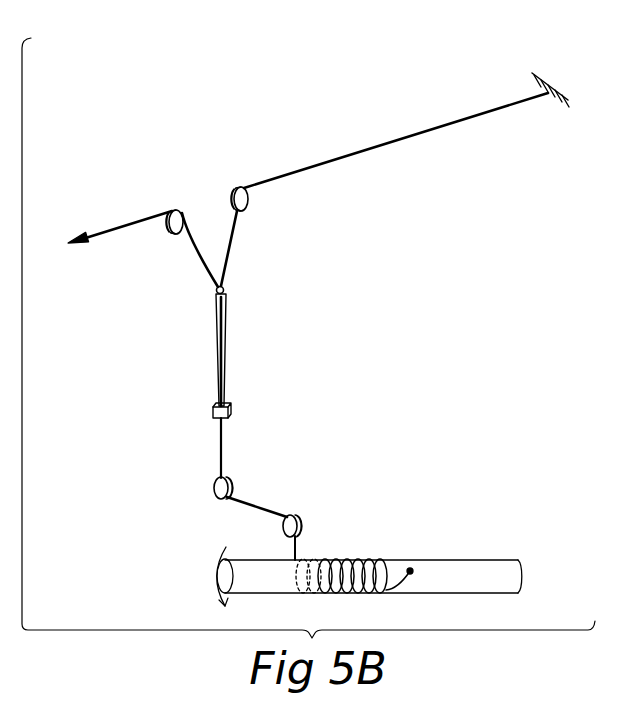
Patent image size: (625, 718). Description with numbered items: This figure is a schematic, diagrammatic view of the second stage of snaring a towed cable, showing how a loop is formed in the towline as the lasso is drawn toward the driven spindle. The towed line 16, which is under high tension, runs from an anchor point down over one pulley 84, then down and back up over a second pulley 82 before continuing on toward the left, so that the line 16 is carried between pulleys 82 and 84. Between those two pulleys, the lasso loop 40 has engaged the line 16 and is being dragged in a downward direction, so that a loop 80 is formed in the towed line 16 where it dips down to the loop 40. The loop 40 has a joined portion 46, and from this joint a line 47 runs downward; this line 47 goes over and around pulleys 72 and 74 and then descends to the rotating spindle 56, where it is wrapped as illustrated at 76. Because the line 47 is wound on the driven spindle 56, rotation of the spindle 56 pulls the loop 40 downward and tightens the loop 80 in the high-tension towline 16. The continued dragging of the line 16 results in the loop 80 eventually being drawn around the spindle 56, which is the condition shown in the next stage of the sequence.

The line 16 is at (105, 227).
The loop 40 is at (228, 350).
The joined portion 46 is at (214, 418).
The line 47 is at (220, 456).
The rotating spindle 56 is at (450, 558).
The pulley 72 is at (230, 487).
The pulley 74 is at (298, 522).
The wrapping 76 is at (387, 557).
The loop 80 is at (232, 250).
The pulley 82 is at (165, 232).
The pulley 84 is at (248, 202).